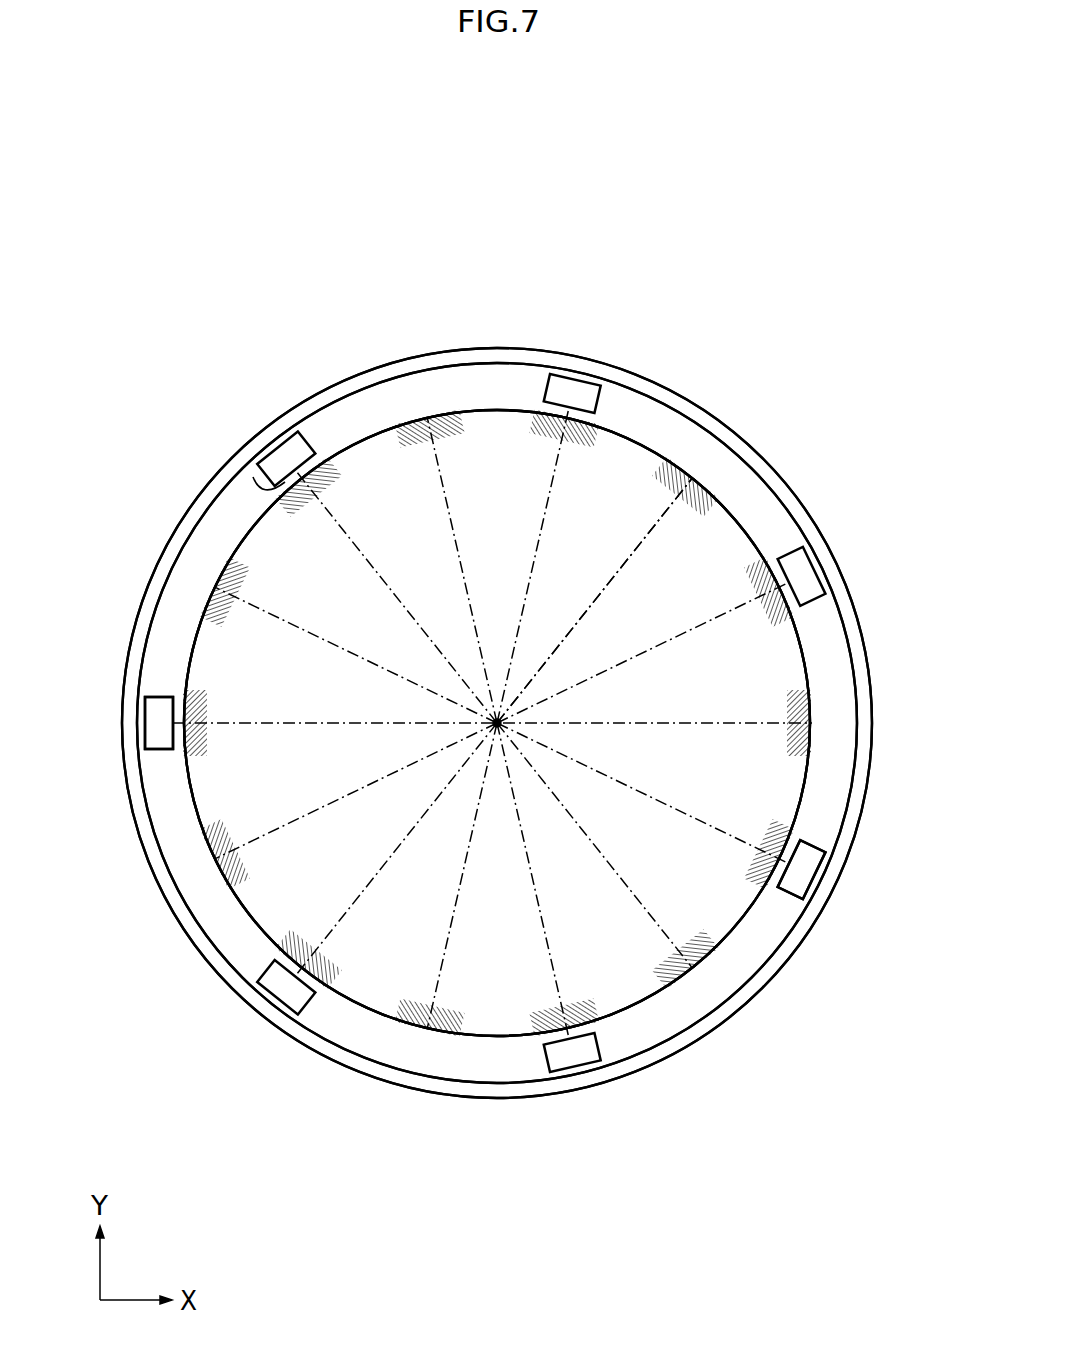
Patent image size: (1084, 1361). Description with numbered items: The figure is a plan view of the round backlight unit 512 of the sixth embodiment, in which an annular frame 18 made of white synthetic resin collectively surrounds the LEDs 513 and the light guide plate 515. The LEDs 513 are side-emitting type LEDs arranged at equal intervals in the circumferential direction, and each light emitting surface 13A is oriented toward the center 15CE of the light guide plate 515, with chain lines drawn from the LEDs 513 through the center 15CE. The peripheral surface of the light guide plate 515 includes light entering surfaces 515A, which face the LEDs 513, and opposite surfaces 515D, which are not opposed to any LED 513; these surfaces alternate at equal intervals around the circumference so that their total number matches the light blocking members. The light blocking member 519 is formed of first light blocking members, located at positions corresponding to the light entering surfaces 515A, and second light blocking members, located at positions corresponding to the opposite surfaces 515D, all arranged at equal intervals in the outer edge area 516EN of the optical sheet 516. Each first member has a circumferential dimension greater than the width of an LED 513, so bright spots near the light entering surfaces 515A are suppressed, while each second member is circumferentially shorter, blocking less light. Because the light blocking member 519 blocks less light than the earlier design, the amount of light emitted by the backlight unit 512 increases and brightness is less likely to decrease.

The backlight unit 512 is at (750, 268).
The frame 18 is at (640, 385).
The light guide plate 515 is at (730, 937).
The optical sheet 516 is at (285, 885).
The outer edge area 516EN is at (370, 998).
The center 15CE is at (718, 505).
The light blocking member 519 is at (512, 1158).
The opposite surfaces 515D is at (425, 415).
The LED 513 is at (571, 390).
The light entering surfaces 515A is at (793, 592).
The light emitting surface 13A is at (253, 477).